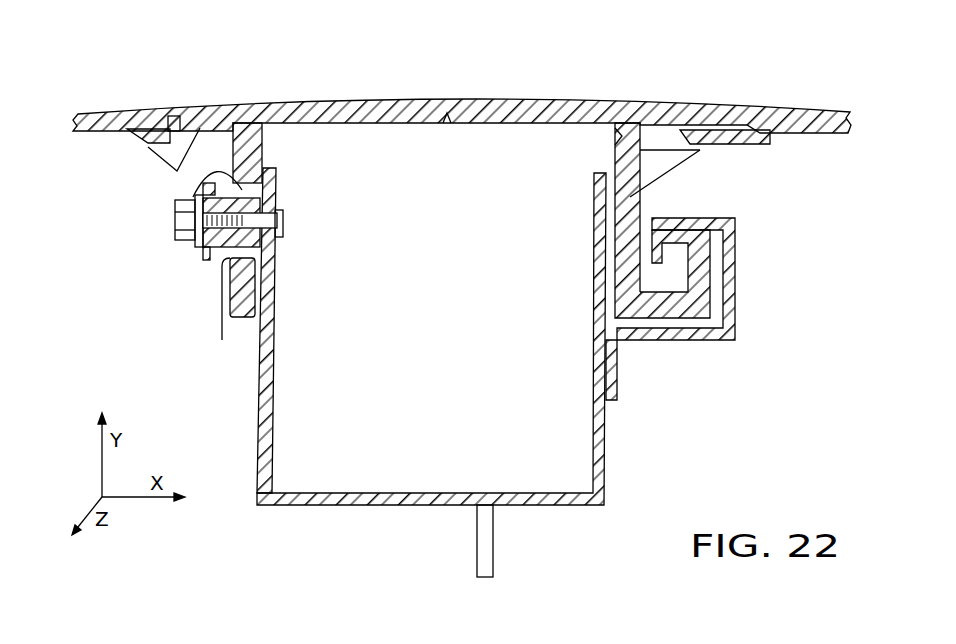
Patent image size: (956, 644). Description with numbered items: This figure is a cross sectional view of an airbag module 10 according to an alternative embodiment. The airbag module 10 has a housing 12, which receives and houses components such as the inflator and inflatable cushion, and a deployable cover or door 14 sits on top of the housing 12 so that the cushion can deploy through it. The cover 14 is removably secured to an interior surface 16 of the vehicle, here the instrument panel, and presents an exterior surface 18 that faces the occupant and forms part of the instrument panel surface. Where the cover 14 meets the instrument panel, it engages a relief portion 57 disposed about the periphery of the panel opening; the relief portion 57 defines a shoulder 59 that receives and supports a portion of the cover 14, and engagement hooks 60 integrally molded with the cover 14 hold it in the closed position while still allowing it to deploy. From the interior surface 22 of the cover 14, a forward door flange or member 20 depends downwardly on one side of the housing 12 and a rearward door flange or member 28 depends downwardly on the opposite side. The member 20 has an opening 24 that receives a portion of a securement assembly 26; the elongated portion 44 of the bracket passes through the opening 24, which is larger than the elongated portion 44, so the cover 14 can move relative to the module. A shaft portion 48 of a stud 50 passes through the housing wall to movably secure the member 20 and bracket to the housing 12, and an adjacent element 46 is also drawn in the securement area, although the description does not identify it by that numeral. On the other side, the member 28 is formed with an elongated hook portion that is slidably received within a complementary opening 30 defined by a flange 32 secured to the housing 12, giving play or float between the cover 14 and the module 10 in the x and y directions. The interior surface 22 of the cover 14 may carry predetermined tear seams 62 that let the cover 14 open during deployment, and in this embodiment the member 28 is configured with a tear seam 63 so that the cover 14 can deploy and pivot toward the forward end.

The airbag module 10 is at (620, 68).
The housing 12 is at (600, 476).
The deployable cover 14 is at (536, 100).
The interior surface 16 is at (110, 117).
The exterior surface 18 is at (231, 108).
The forward door flange 20 is at (255, 168).
The interior surface 22 is at (348, 123).
The opening 24 is at (231, 313).
The securement assembly 26 is at (176, 223).
The rearward door flange 28 is at (630, 193).
The opening 30 is at (731, 240).
The flange 32 is at (740, 290).
The elongated portion 44 is at (200, 176).
The retainer tab 46 is at (215, 262).
The shaft portion 48 is at (488, 540).
The stud 50 is at (287, 240).
The relief portion 57 is at (148, 140).
The shoulder 59 is at (170, 120).
The engagement hook 60 is at (173, 158).
The tear seam 62 is at (442, 108).
The tear seam 63 is at (613, 142).